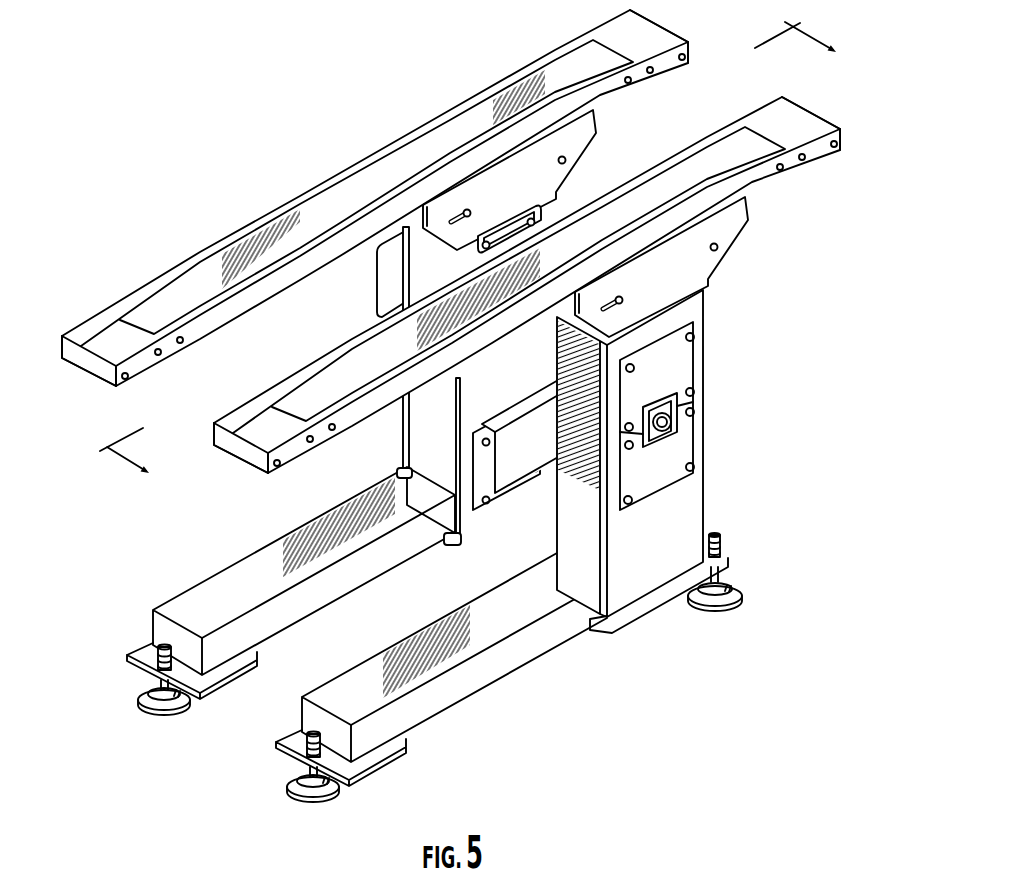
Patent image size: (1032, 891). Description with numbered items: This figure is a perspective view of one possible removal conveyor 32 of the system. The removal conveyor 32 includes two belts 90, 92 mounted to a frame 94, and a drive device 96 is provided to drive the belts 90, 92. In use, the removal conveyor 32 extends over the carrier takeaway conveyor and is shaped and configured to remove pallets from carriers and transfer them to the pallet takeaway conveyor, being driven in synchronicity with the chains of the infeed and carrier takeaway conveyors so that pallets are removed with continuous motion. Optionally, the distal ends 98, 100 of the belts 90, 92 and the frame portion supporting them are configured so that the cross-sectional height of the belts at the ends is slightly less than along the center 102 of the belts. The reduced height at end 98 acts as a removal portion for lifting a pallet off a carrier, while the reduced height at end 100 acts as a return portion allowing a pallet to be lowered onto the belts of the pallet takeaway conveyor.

The removal conveyor 32 is at (460, 406).
The belt 90 is at (687, 185).
The belt 92 is at (419, 163).
The frame 94 is at (700, 357).
The drive device 96 is at (375, 288).
The distal end 98 is at (147, 368).
The distal end 100 is at (670, 66).
The center 102 is at (317, 224).